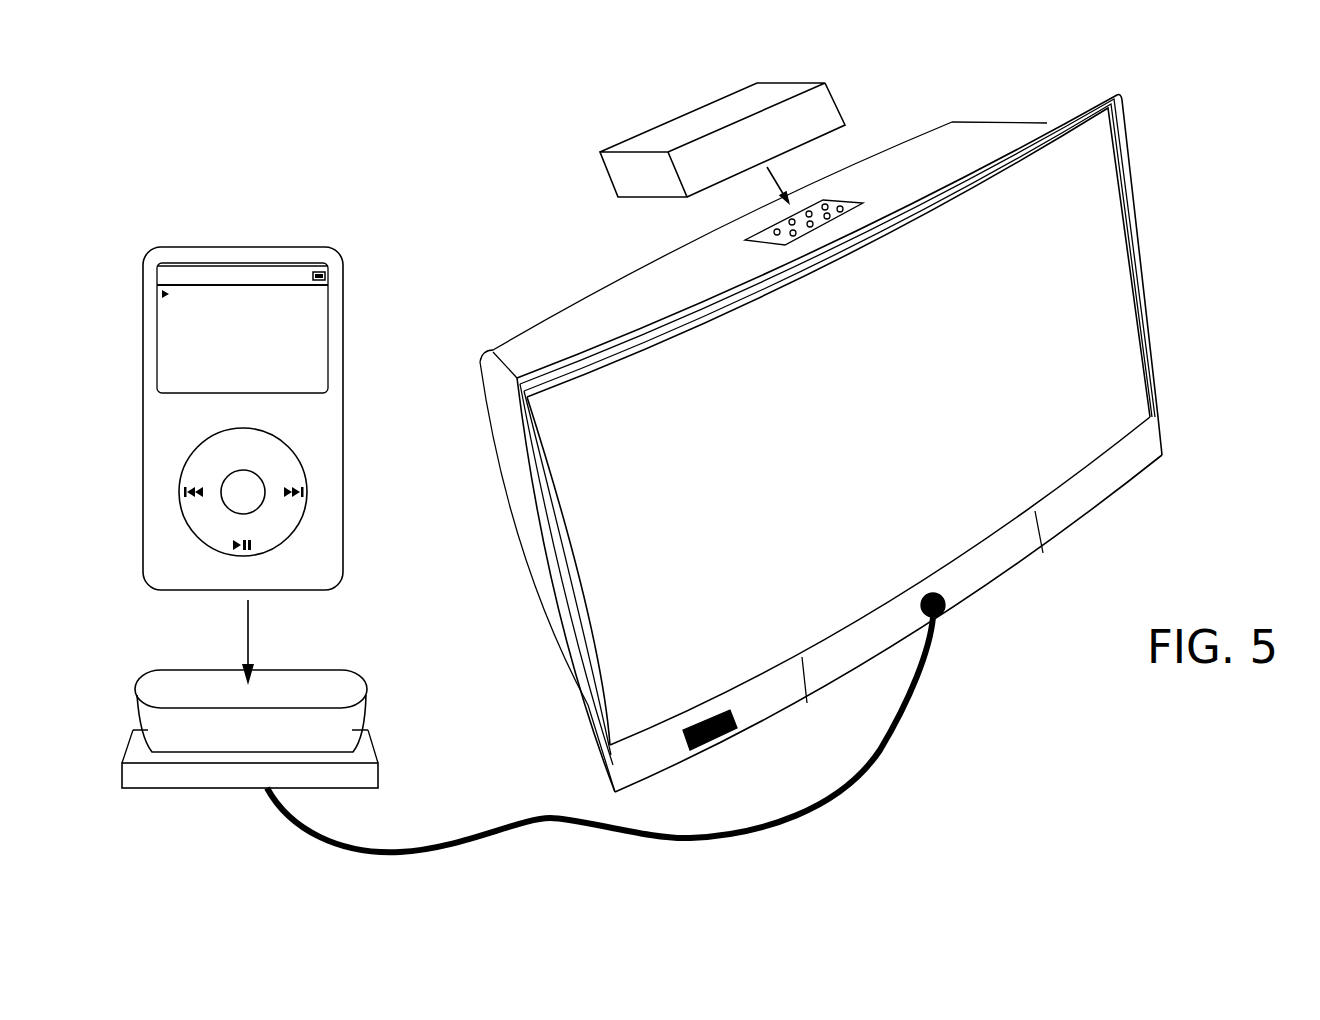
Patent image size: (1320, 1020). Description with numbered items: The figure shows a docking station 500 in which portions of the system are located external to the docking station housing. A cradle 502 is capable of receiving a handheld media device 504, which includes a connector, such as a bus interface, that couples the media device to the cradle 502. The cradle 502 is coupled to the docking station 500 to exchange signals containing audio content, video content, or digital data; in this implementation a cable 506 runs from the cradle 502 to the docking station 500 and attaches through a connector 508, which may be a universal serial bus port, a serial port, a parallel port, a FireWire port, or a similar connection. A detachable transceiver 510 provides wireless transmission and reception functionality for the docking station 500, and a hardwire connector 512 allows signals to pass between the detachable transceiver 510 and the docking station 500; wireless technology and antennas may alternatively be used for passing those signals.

The docking station 500 is at (503, 423).
The cradle 502 is at (367, 685).
The handheld media device 504 is at (222, 247).
The cable 506 is at (508, 820).
The connector 508 is at (943, 612).
The detachable transceiver 510 is at (840, 112).
The hardwire connector 512 is at (875, 188).